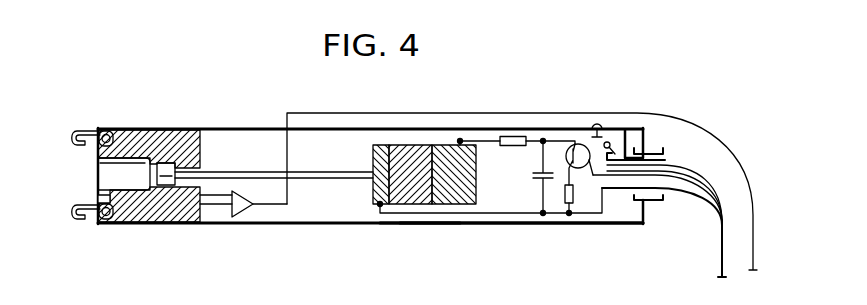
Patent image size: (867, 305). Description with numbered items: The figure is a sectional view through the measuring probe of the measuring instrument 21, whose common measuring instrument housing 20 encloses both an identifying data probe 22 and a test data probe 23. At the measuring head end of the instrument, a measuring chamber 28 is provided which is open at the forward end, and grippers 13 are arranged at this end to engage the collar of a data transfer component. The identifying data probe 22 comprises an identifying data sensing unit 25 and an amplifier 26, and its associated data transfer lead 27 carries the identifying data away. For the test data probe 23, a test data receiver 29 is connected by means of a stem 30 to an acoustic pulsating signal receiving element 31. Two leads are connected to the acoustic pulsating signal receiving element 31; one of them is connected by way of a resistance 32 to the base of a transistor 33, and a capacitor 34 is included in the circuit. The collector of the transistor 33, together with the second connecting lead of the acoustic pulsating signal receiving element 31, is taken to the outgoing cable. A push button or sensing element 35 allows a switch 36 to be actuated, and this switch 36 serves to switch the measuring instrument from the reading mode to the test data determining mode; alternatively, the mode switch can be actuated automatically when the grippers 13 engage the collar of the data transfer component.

The grippers 13 is at (84, 132).
The measuring instrument housing 20 is at (333, 224).
The measuring instrument 21 is at (430, 232).
The identifying data probe 22 is at (174, 225).
The test data probe 23 is at (510, 222).
The identifying data sensing unit 25 is at (97, 200).
The amplifier 26 is at (240, 206).
The data transfer lead 27 is at (460, 113).
The measuring chamber 28 is at (102, 173).
The test data receiver 29 is at (168, 164).
The stem 30 is at (233, 172).
The acoustic pulsating signal receiving element 31 is at (407, 150).
The resistance 32 is at (512, 136).
The transistor 33 is at (566, 148).
The capacitor 34 is at (533, 176).
The push button or sensing element 35 is at (598, 122).
The switch 36 is at (618, 142).